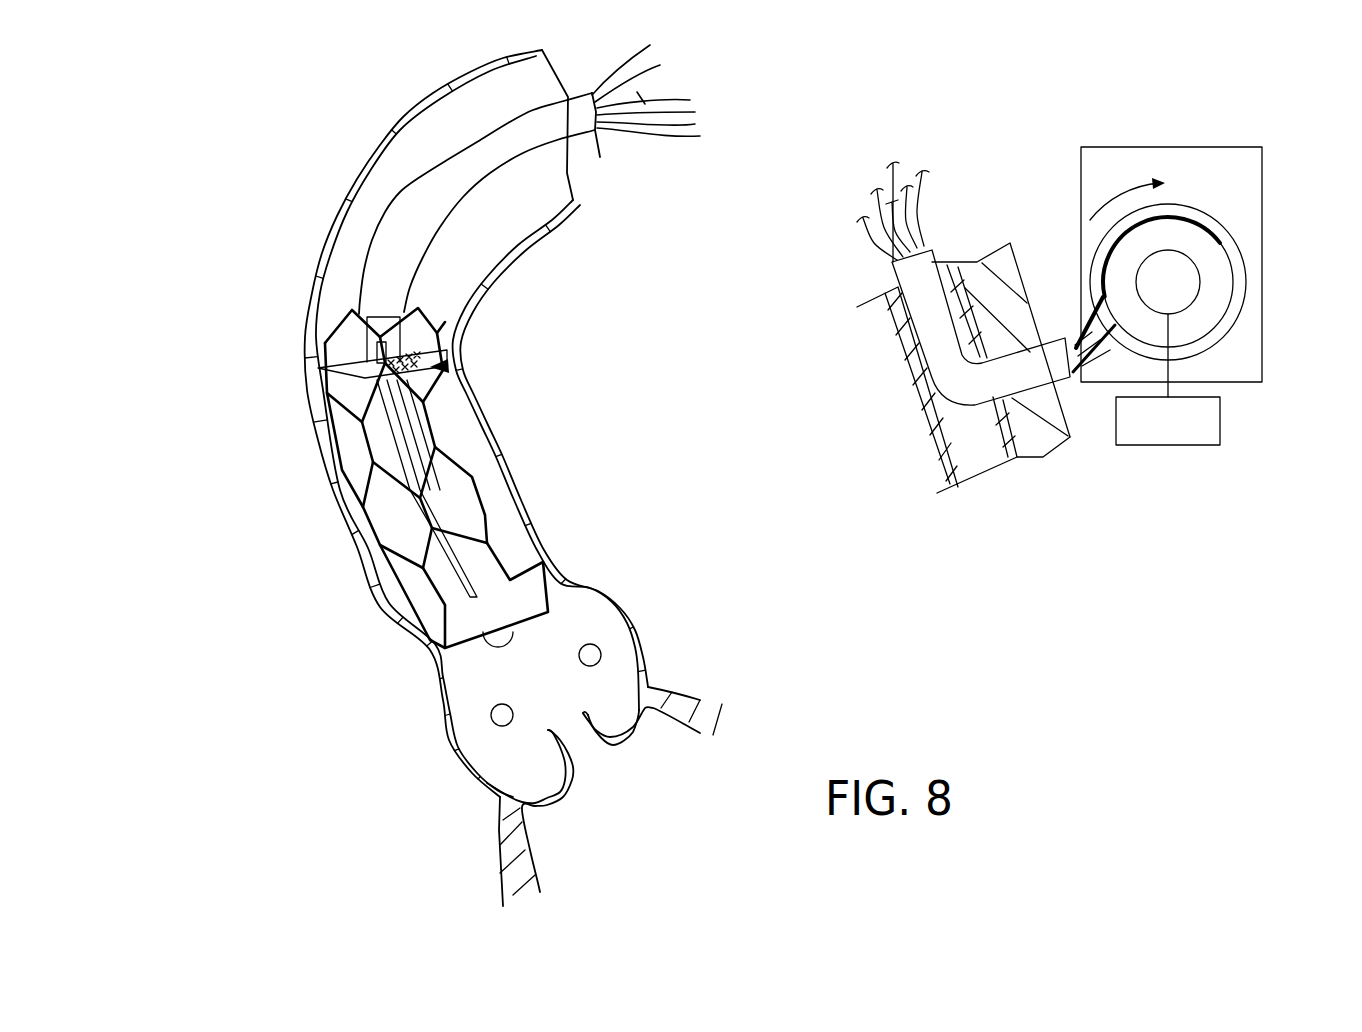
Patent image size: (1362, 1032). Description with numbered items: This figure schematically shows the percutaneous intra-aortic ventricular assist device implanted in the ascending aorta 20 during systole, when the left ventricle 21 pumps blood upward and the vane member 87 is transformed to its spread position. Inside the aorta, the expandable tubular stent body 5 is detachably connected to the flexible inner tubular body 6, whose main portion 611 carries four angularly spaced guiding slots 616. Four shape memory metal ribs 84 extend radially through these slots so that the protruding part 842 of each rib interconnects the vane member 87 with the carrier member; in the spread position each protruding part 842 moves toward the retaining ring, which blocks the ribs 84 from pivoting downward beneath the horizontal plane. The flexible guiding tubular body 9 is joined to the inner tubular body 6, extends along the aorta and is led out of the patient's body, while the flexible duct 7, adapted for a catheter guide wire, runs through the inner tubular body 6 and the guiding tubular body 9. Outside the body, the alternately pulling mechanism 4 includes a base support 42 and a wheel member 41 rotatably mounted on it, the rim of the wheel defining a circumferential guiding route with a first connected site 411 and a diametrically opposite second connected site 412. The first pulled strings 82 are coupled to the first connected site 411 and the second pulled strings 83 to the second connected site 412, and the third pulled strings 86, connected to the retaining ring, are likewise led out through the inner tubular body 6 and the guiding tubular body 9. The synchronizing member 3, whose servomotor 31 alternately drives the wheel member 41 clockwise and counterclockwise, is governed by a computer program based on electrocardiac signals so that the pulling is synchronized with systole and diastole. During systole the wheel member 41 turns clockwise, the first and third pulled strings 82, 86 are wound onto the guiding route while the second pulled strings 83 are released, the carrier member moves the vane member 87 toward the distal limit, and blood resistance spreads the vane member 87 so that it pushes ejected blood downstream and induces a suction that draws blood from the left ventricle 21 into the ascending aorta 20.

The ascending aorta 20 is at (312, 382).
The left ventricle 21 is at (553, 838).
The guiding tubular body 9 is at (438, 200).
The duct 7 is at (640, 93).
The inner tubular body 6 is at (448, 468).
The main portion 611 is at (440, 502).
The guiding slots 616 is at (400, 427).
The tubular stent body 5 is at (450, 337).
The ribs 84 is at (457, 370).
The protruding part 842 is at (477, 367).
The vane member 87 is at (447, 378).
The second pulled strings 83 is at (1088, 357).
The third pulled strings 86 is at (1081, 300).
The first pulled strings 82 is at (1070, 330).
The second connected site 412 is at (1115, 337).
The alternately pulling mechanism 4 is at (1210, 212).
The wheel member 41 is at (1207, 218).
The base support 42 is at (1256, 170).
The first connected site 411 is at (1220, 242).
The servomotor 31 is at (1192, 288).
The synchronizing member 3 is at (1232, 424).